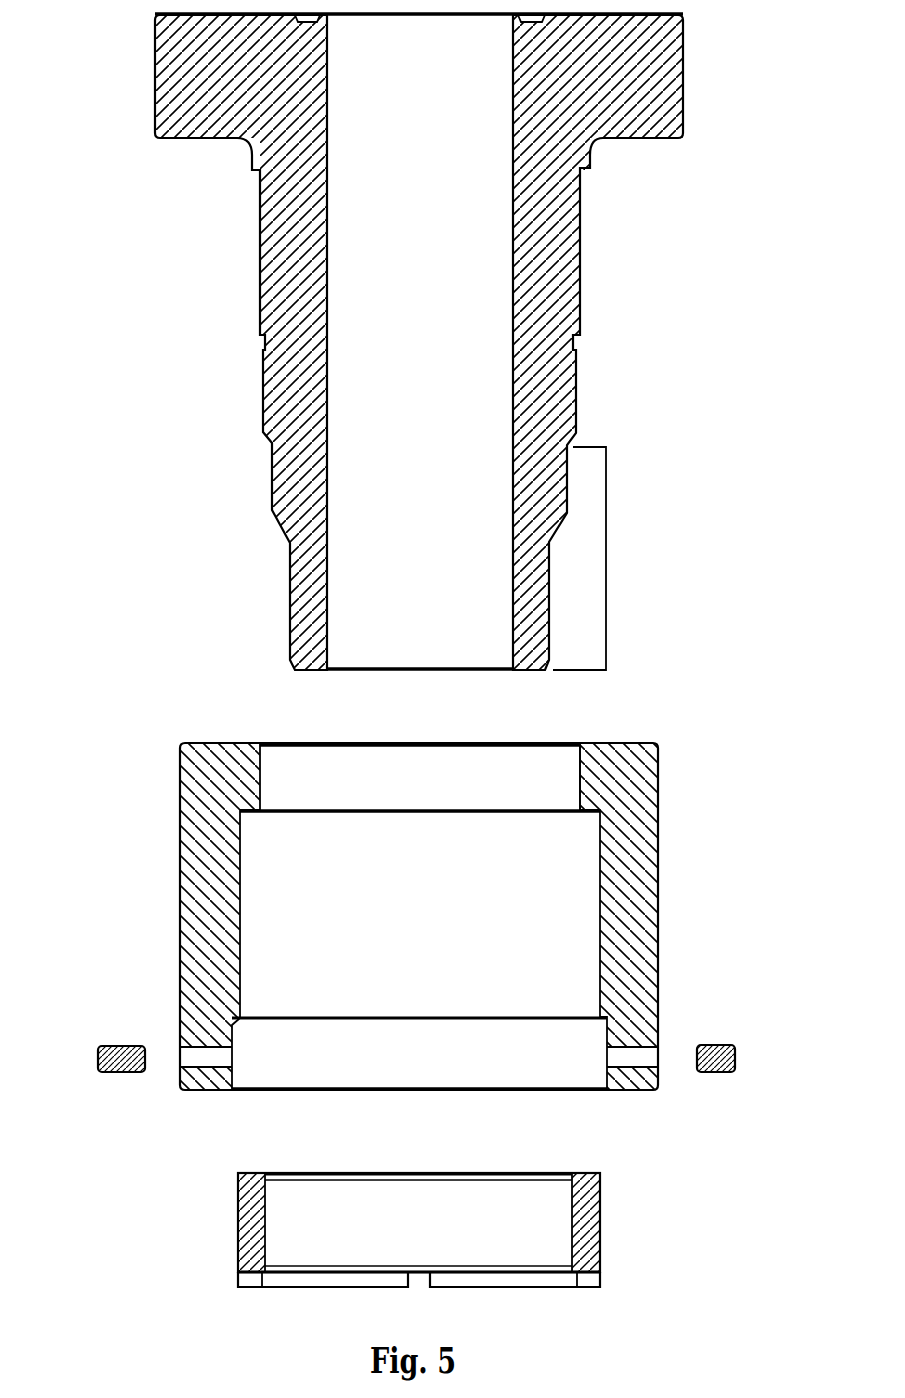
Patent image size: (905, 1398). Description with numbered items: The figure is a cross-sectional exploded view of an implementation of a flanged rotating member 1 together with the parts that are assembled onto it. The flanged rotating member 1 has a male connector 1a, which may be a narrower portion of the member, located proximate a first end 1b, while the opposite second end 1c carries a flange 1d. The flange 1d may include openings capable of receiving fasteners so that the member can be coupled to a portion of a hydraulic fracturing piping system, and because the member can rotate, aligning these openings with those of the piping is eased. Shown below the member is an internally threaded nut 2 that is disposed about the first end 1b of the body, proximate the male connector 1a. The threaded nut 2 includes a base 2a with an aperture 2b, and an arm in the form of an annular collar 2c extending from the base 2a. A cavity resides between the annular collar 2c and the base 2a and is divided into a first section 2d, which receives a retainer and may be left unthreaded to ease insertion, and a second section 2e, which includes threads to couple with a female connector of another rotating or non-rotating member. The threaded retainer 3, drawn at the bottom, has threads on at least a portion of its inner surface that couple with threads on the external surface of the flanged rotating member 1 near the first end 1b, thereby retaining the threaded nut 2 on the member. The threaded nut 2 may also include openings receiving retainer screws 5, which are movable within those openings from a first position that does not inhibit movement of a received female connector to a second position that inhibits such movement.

The flanged rotating member 1 is at (408, 342).
The male connector 1a is at (606, 555).
The first end 1b is at (287, 610).
The second end 1c is at (635, 165).
The flange 1d is at (188, 65).
The internally threaded nut 2 is at (403, 886).
The base 2a is at (613, 763).
The aperture 2b is at (527, 775).
The annular collar 2c is at (195, 905).
The first section 2d is at (384, 788).
The second section 2e is at (359, 873).
The threaded retainer 3 is at (585, 1218).
The retainer screw 5 is at (125, 1048).